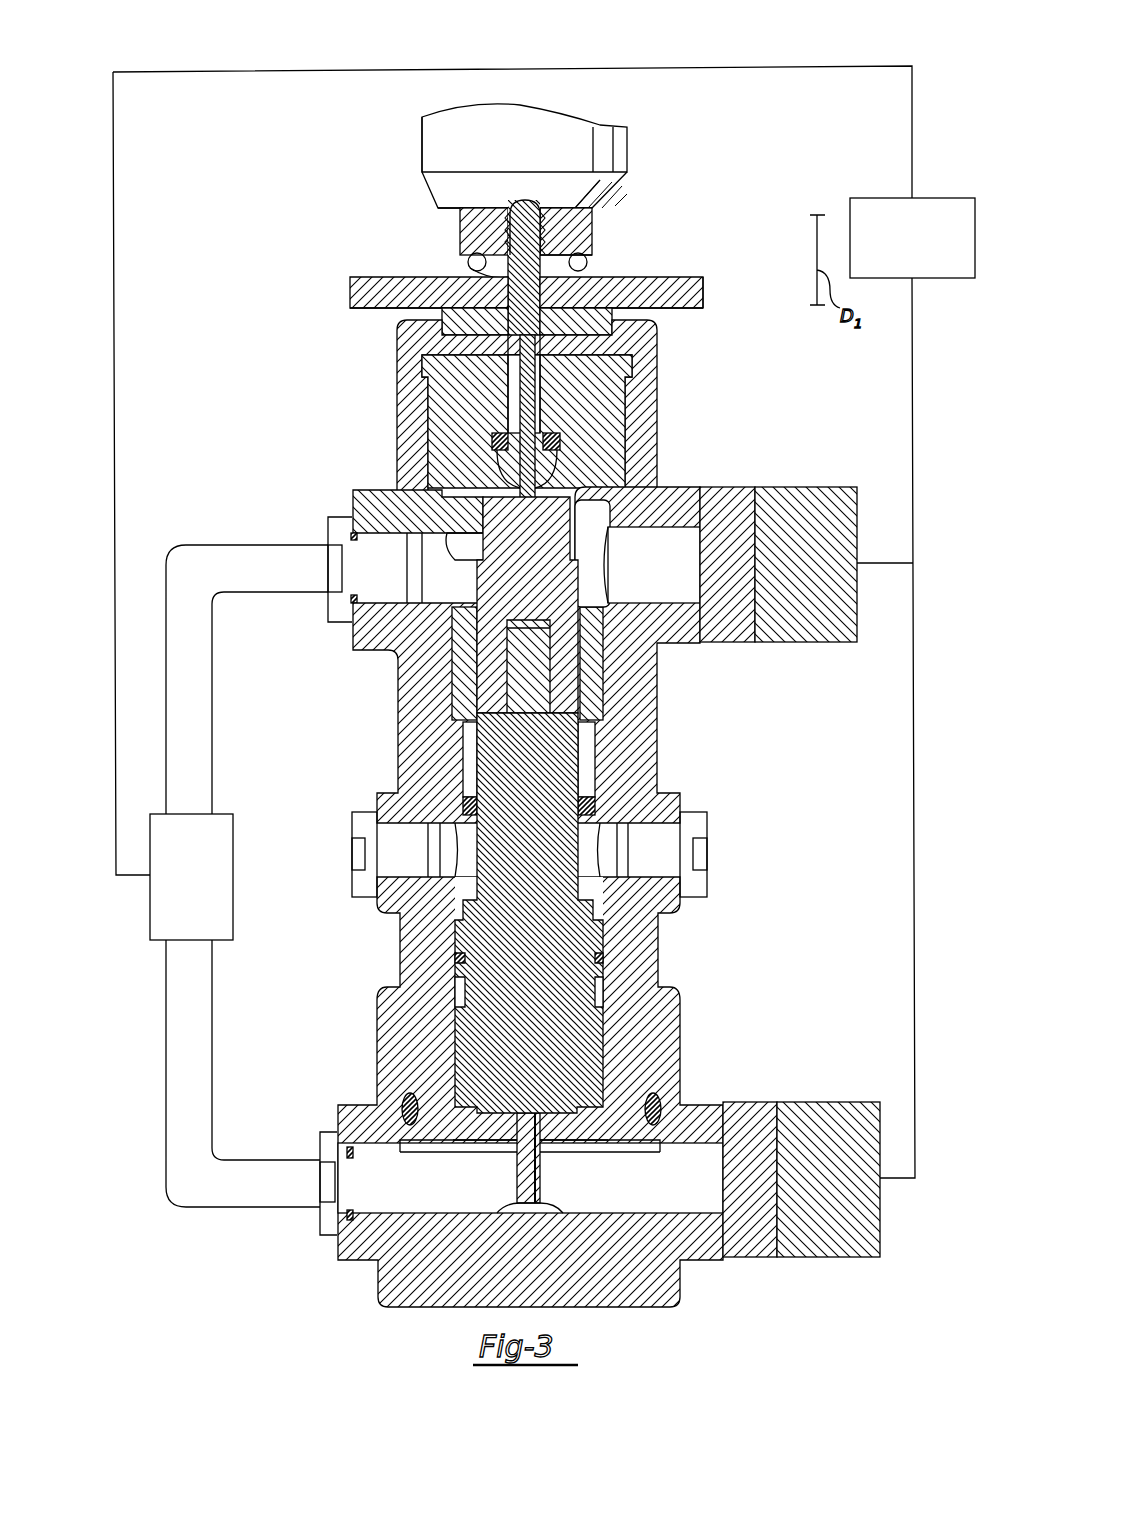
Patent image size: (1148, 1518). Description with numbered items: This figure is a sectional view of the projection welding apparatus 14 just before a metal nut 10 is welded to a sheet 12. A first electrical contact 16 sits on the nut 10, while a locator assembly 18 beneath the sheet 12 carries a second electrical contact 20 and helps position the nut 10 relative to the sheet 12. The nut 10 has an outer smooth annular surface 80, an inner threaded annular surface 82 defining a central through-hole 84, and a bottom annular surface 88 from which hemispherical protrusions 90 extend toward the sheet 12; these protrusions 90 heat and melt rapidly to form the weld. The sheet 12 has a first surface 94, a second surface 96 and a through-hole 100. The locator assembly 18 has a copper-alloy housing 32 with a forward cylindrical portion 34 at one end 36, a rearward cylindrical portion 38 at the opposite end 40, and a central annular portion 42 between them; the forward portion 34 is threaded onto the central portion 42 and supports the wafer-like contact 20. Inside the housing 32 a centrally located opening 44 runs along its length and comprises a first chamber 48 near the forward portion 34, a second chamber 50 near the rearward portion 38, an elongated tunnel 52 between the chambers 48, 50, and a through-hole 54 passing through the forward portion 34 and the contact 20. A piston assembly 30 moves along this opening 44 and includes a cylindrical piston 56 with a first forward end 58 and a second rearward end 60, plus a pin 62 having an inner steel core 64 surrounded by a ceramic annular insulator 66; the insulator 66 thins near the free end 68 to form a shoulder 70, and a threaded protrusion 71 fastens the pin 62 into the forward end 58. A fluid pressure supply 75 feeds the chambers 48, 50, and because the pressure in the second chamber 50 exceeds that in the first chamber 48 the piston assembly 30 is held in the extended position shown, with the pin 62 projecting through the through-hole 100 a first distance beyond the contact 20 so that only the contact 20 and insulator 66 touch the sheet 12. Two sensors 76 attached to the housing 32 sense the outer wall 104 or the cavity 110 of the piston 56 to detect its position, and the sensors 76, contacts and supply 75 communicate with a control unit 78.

The metal nut 10 is at (462, 232).
The sheet 12 is at (702, 283).
The projection welding apparatus 14 is at (800, 62).
The first electrical contact 16 is at (620, 140).
The locator assembly 18 is at (603, 629).
The second electrical contact 20 is at (618, 312).
The piston assembly 30 is at (560, 762).
The housing 32 is at (680, 975).
The forward cylindrical portion 34 is at (620, 410).
The end 36 is at (485, 428).
The rearward cylindrical portion 38 is at (398, 1292).
The opposite end 40 is at (578, 1110).
The central annular portion 42 is at (648, 703).
The internal opening 44 is at (595, 893).
The first chamber 48 is at (607, 512).
The second chamber 50 is at (632, 1187).
The elongated tunnel 52 is at (590, 850).
The through-hole 54 is at (513, 415).
The piston 56 is at (518, 923).
The first forward end 58 is at (480, 500).
The second rearward end 60 is at (513, 1023).
The pin 62 is at (525, 348).
The inner cylindrical steel core 64 is at (510, 378).
The annular insulator 66 is at (500, 276).
The free end 68 is at (593, 207).
The shoulder 70 is at (553, 245).
The threaded protrusion 71 is at (523, 557).
The fluid pressure supply 75 is at (198, 878).
The sensors 76 is at (673, 587).
The control unit 78 is at (950, 198).
The outer smooth annular surface 80 is at (458, 212).
The inner threaded annular surface 82 is at (527, 168).
The central through-hole 84 is at (518, 208).
The bottom annular surface 88 is at (470, 266).
The protrusions 90 is at (585, 273).
The first surface 94 is at (702, 305).
The second surface 96 is at (702, 277).
The through-hole 100 is at (507, 403).
The outer wall 104 is at (472, 582).
The cavity 110 is at (480, 535).